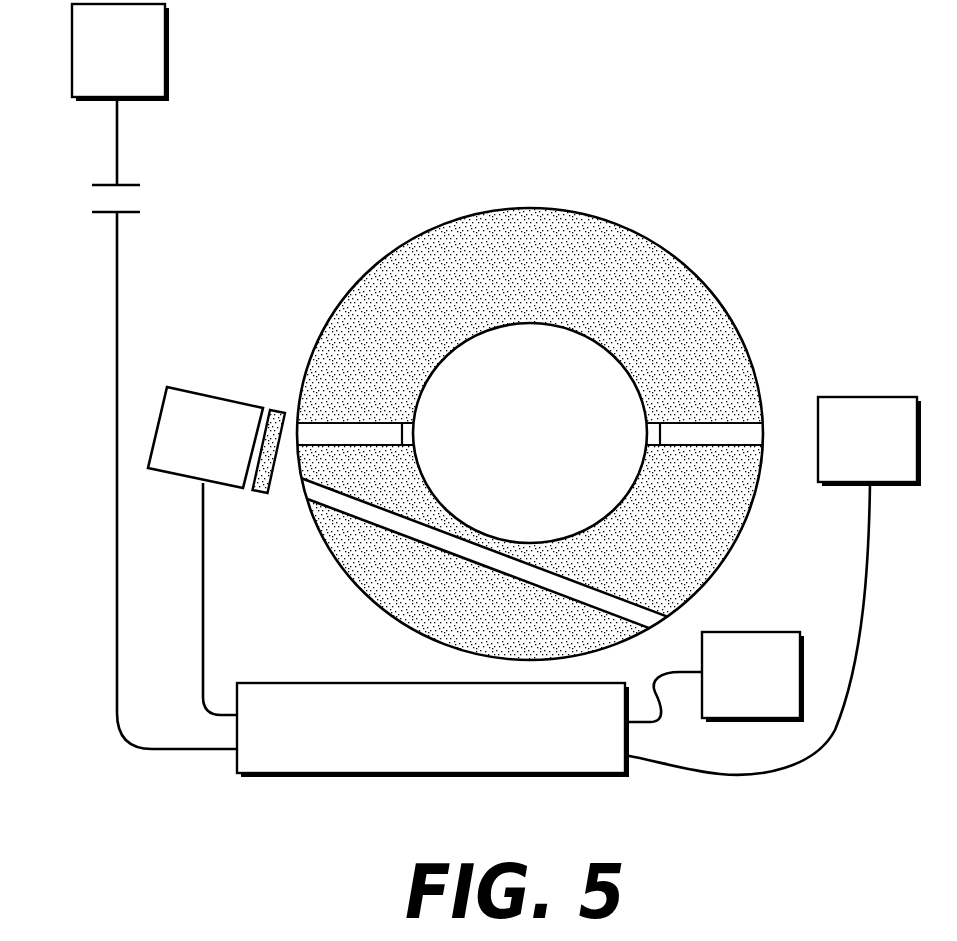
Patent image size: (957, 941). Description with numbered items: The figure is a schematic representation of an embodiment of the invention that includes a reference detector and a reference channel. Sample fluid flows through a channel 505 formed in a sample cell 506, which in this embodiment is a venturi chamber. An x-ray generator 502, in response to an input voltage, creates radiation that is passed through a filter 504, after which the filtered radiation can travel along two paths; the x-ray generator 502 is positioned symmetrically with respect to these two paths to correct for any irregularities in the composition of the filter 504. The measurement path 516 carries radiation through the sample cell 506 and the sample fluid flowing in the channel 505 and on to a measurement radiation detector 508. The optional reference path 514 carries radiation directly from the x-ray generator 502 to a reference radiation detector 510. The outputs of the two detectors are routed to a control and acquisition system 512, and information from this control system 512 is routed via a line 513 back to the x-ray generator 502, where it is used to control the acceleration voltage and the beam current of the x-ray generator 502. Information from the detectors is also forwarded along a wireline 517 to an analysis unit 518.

The x-ray generator 502 is at (225, 385).
The filter 504 is at (281, 396).
The channel 505 is at (499, 448).
The sample cell 506 is at (742, 317).
The measurement radiation detector 508 is at (834, 455).
The reference radiation detector 510 is at (718, 688).
The control and acquisition system 512 is at (400, 744).
The line 513 is at (202, 594).
The reference path 514 is at (414, 551).
The measurement path 516 is at (358, 412).
The wireline 517 is at (117, 385).
The analysis unit 518 is at (84, 65).